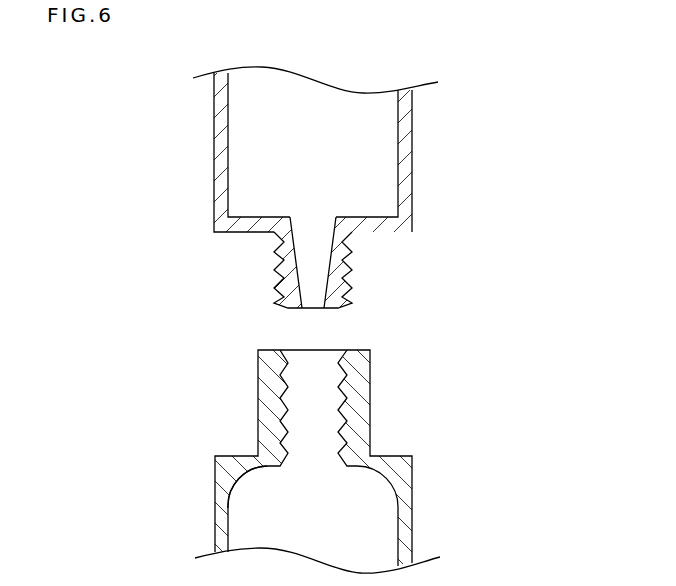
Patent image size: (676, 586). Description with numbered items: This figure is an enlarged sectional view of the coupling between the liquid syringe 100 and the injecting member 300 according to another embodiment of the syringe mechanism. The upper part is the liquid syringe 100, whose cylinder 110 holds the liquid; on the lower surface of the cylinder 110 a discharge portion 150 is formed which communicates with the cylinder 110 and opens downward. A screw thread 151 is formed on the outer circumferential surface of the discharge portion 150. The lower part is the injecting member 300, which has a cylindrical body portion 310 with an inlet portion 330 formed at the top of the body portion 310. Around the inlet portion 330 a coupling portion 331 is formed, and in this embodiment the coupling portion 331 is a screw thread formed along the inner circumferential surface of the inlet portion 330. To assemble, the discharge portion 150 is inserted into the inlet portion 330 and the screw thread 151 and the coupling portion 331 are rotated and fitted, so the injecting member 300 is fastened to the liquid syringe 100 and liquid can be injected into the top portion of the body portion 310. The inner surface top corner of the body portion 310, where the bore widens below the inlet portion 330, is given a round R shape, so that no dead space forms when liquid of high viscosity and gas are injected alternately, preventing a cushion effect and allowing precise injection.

The liquid syringe 100 is at (325, 190).
The cylinder 110 is at (403, 143).
The discharge portion 150 is at (332, 262).
The screw thread 151 is at (282, 272).
The injecting member 300 is at (314, 460).
The body portion 310 is at (220, 523).
The inlet portion 330 is at (341, 408).
The coupling portion 331 is at (284, 388).
The round shape R is at (237, 485).